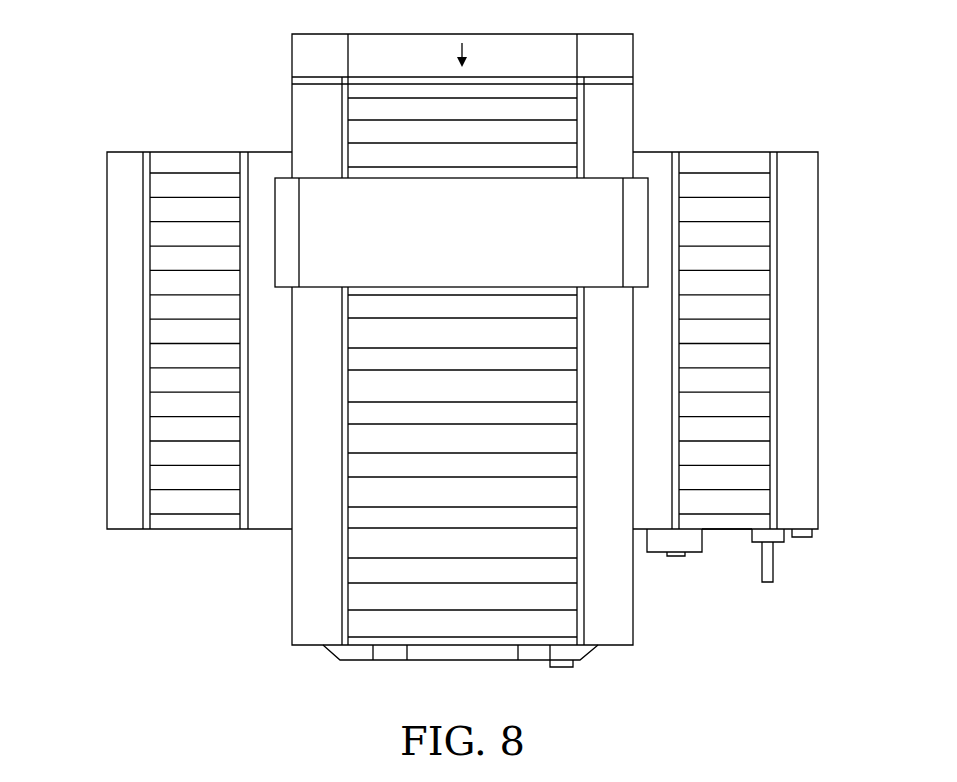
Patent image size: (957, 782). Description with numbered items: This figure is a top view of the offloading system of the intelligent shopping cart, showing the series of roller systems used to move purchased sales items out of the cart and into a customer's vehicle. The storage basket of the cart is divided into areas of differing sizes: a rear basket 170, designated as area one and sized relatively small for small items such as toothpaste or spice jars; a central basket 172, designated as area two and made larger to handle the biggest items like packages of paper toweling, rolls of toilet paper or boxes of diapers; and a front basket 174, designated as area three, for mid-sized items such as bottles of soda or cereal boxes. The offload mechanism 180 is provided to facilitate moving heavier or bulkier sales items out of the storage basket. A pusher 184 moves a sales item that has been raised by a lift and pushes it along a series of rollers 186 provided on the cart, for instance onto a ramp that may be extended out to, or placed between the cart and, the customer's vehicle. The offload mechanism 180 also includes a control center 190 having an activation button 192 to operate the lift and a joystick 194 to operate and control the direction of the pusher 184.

The rear basket 170 is at (842, 394).
The central basket 172 is at (272, 578).
The front basket 174 is at (87, 494).
The offload mechanism 180 is at (110, 111).
The pusher 184 is at (594, 230).
The rollers 186 is at (157, 310).
The control center 190 is at (733, 547).
The activation button 192 is at (687, 557).
The joystick 194 is at (768, 572).